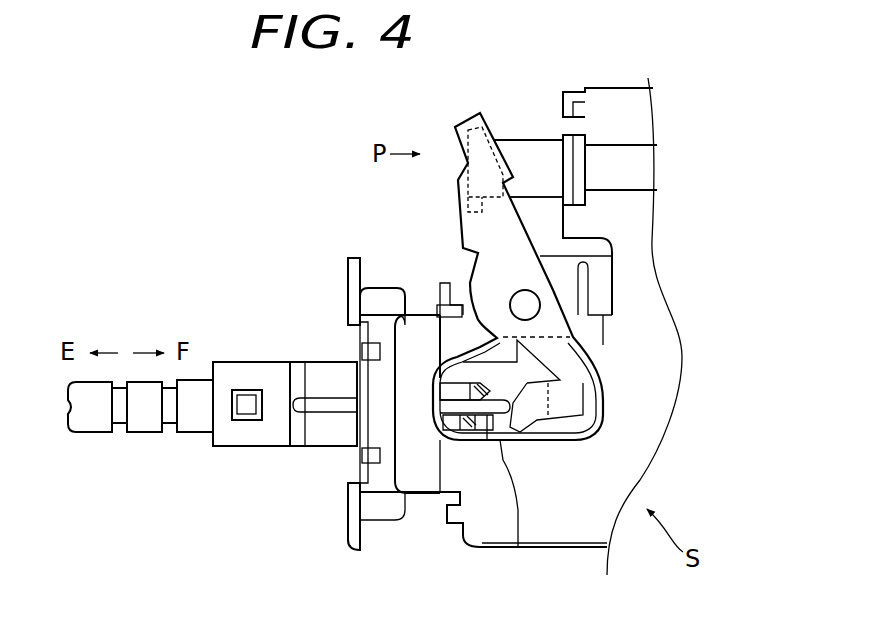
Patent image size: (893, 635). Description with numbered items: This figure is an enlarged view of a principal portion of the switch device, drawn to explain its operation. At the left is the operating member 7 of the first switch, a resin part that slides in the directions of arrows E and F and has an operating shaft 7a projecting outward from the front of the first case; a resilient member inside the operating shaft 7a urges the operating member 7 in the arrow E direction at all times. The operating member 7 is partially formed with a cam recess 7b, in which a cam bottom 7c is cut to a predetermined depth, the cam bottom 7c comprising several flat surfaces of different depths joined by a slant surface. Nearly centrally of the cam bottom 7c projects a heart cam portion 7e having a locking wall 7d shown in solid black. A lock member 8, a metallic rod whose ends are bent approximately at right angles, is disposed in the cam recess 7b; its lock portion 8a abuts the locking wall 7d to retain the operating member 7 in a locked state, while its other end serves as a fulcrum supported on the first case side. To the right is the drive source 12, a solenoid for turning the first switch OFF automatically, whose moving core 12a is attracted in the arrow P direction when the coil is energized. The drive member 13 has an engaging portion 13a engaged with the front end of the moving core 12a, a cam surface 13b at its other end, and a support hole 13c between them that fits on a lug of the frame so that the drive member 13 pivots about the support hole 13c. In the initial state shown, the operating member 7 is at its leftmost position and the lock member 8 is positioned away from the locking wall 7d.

The operating member 7 is at (470, 362).
The operating shaft 7a is at (203, 416).
The cam recess 7b is at (476, 373).
The cam bottom 7c is at (490, 400).
The locking wall 7d is at (451, 411).
The heart cam portion 7e is at (487, 437).
The lock member 8 is at (443, 437).
The lock portion 8a is at (503, 440).
The drive source 12 is at (617, 126).
The moving core 12a is at (537, 153).
The drive member 13 is at (441, 216).
The engaging portion 13a is at (488, 125).
The cam surface 13b is at (575, 437).
The support hole 13c is at (528, 303).